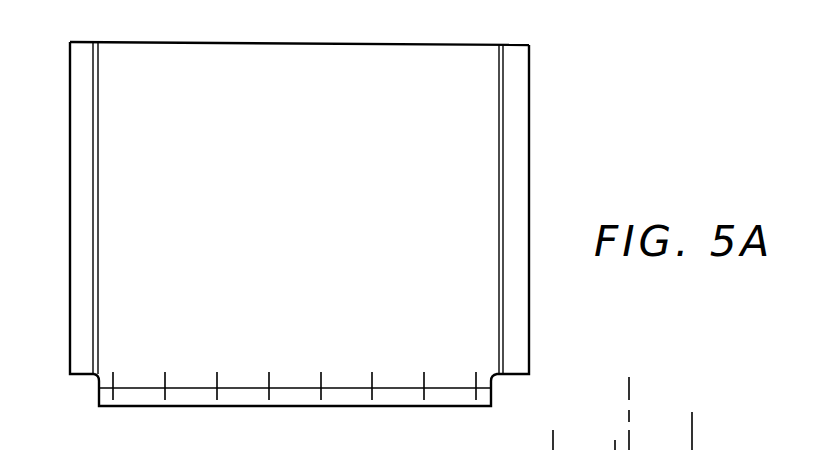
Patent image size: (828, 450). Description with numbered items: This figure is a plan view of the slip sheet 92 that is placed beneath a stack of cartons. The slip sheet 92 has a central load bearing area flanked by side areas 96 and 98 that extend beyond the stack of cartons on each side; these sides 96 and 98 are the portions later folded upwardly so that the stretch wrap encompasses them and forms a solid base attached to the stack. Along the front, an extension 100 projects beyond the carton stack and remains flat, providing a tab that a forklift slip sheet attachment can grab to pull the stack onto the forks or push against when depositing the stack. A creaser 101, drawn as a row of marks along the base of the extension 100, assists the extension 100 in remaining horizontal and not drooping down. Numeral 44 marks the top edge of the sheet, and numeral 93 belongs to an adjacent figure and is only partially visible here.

The top rail 44 is at (382, 45).
The slip sheet 92 is at (302, 209).
The side area 96 is at (512, 120).
The side area 98 is at (72, 147).
The extension 100 is at (197, 398).
The creaser 101 is at (270, 392).
The adjacent figure element (partial) 93 is at (722, 444).